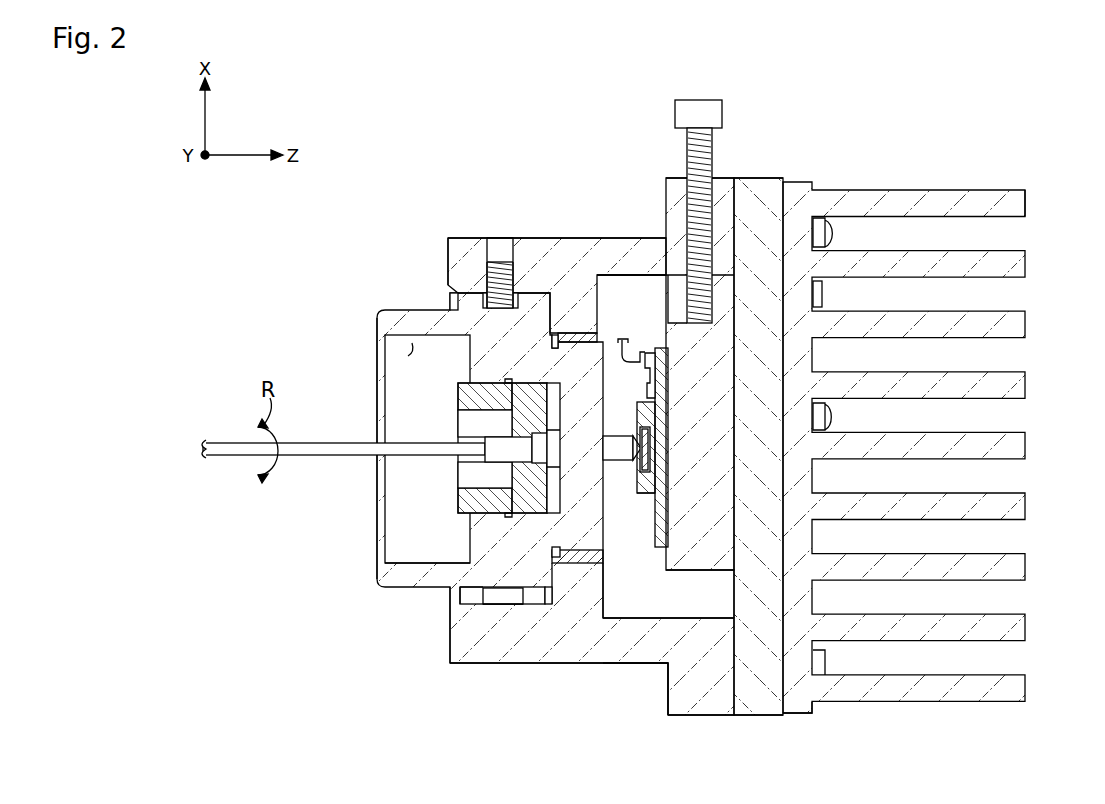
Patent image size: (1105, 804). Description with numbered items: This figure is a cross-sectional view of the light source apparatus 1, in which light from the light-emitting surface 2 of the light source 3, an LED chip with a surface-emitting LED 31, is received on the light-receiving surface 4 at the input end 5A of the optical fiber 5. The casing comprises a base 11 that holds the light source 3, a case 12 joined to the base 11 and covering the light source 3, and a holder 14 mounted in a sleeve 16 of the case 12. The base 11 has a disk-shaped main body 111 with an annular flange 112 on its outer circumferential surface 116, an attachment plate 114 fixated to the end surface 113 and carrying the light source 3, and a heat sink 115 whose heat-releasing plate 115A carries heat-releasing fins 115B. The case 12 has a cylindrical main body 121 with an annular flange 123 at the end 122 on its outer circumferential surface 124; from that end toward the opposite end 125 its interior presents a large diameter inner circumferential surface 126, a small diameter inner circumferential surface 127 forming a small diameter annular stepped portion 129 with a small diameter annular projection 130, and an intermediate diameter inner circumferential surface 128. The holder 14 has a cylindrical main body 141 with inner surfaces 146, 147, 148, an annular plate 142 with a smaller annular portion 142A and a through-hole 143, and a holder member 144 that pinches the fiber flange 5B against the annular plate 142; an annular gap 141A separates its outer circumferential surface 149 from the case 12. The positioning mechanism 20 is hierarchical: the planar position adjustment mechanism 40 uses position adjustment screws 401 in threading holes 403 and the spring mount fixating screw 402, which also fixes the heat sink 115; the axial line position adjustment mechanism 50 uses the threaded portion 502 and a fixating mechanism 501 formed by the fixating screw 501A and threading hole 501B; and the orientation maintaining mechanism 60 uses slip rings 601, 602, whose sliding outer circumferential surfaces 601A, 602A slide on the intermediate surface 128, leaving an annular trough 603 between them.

The light source apparatus 1 is at (442, 230).
The light-emitting surface 2 is at (650, 448).
The light source 3 is at (647, 494).
The LED 31 is at (648, 458).
The light-receiving surface 4 is at (652, 438).
The optical fiber 5 is at (222, 442).
The input end 5A is at (598, 436).
The flange 5B is at (553, 430).
The base 11 is at (778, 716).
The disk-shaped main body 111 is at (697, 343).
The annular flange 112 is at (762, 178).
The end surface 113 is at (668, 572).
The attachment plate 114 is at (662, 522).
The heat sink 115 is at (800, 181).
The heat-releasing plate 115A is at (795, 715).
The heat-releasing fins 115B is at (1028, 316).
The outer circumferential surface 116 is at (727, 312).
The case 12 is at (447, 246).
The cylindrical main body 121 is at (578, 237).
The end 122 is at (740, 716).
The annular flange 123 is at (718, 716).
The outer circumferential surface 124 is at (648, 666).
The end 125 is at (448, 648).
The large diameter inner circumferential surface 126 is at (688, 626).
The small diameter inner circumferential surface 127 is at (614, 335).
The intermediate diameter inner circumferential surface 128 is at (503, 606).
The small diameter annular stepped portion 129 is at (595, 574).
The small diameter annular projection 130 is at (543, 552).
The holder 14 is at (380, 316).
The cylindrical main body 141 is at (376, 580).
The annular gap 141A is at (520, 620).
The annular plate 142 is at (565, 332).
The annular portion 142A is at (552, 342).
The through-hole 143 is at (575, 462).
The holder member 144 is at (475, 482).
The small diameter inner circumferential surface 146 is at (478, 412).
The intermediate diameter inner circumferential surface 147 is at (482, 397).
The large diameter inner circumferential surface 148 is at (412, 343).
The outer circumferential surface 149 is at (405, 592).
The sleeve 16 is at (452, 270).
The positioning mechanism 20 is at (688, 179).
The planar position adjustment mechanism 40 is at (688, 179).
The position adjustment screw 401 is at (678, 112).
The spring mount fixating screw 402 is at (838, 232).
The threading hole 403 is at (708, 172).
The axial line position adjustment mechanism 50 is at (482, 264).
The fixating mechanism 501 is at (510, 228).
The fixating screw 501A is at (498, 262).
The threading hole 501B is at (496, 252).
The threaded portion 502 is at (595, 562).
The orientation maintaining mechanism 60 is at (440, 304).
The slip ring 601 is at (575, 574).
The sliding outer circumferential surface 601A is at (528, 606).
The slip ring 602 is at (462, 600).
The sliding outer circumferential surface 602A is at (465, 612).
The annular trough 603 is at (492, 600).